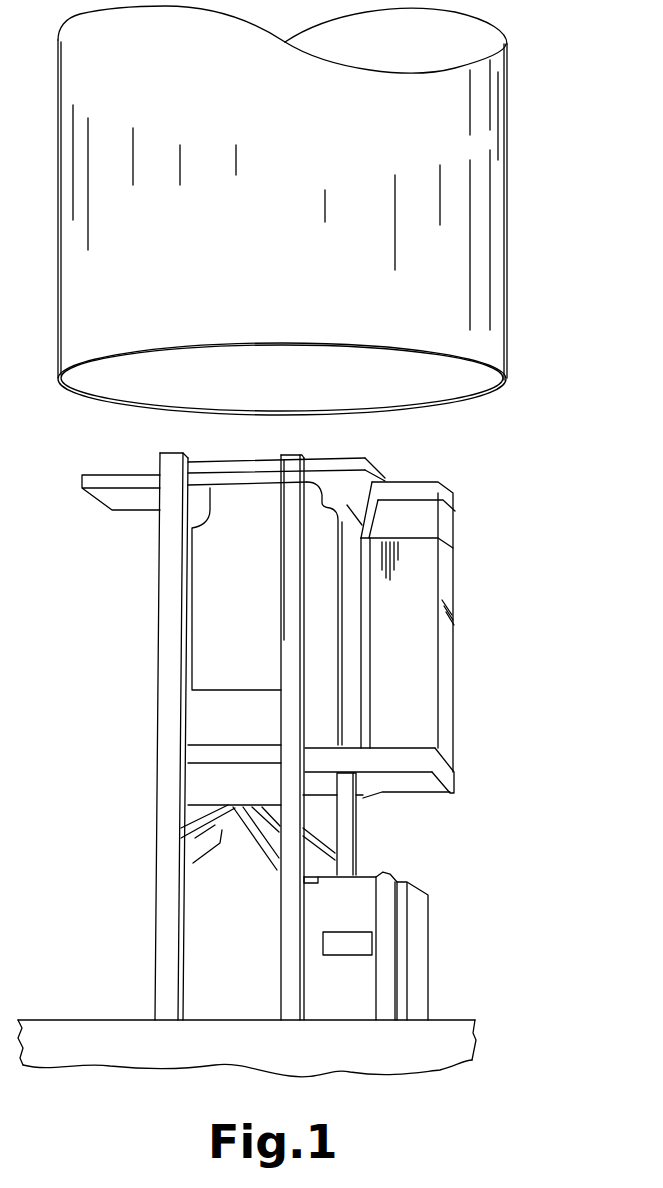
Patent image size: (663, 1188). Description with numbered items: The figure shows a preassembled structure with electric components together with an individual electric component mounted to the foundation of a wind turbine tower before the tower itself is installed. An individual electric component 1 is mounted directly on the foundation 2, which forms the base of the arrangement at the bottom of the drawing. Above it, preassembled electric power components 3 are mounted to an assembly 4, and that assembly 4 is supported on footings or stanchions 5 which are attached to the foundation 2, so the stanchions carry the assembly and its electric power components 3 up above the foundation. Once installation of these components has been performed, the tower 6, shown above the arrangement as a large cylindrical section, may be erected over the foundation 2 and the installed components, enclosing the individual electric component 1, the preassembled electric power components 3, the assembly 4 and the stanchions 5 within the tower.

The individual electric component 1 is at (415, 940).
The foundation 2 is at (476, 1044).
The preassembled electric power components 3 is at (413, 660).
The assembly 4 is at (455, 782).
The footings or stanchions 5 is at (167, 893).
The tower 6 is at (470, 250).